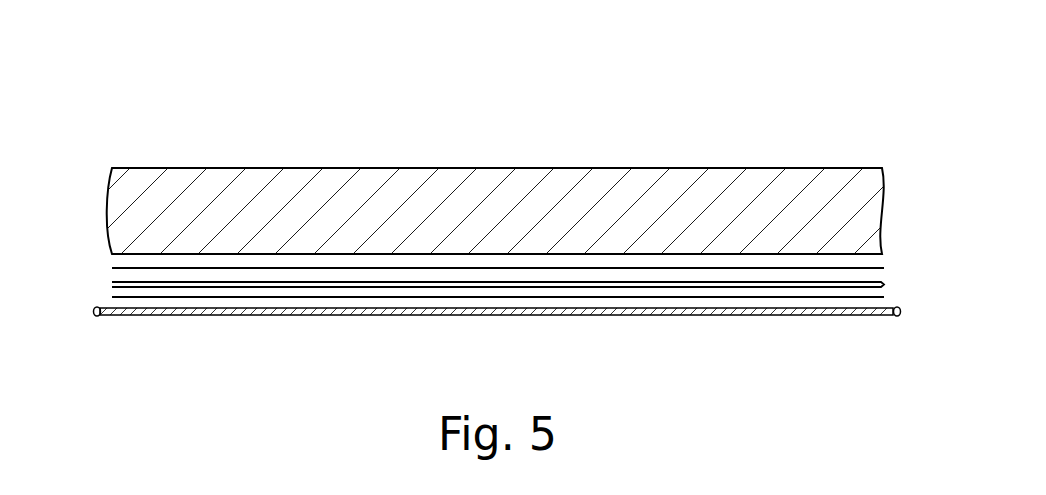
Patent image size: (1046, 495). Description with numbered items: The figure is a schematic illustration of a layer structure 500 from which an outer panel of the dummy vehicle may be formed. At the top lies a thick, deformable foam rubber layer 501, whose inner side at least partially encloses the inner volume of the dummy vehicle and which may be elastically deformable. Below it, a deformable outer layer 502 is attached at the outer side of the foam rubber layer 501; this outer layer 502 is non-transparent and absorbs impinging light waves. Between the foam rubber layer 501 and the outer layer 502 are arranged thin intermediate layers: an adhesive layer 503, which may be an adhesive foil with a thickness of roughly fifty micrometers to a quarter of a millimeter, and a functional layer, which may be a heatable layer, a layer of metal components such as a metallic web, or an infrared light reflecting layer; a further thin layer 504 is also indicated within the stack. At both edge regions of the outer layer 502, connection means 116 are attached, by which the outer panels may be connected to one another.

The layer structure 500 is at (776, 132).
The foam rubber layer 501 is at (252, 219).
The outer layer 502 is at (241, 312).
The adhesive layer 503 is at (112, 287).
The thin layer 504 is at (584, 268).
The connection means 116 is at (97, 316).